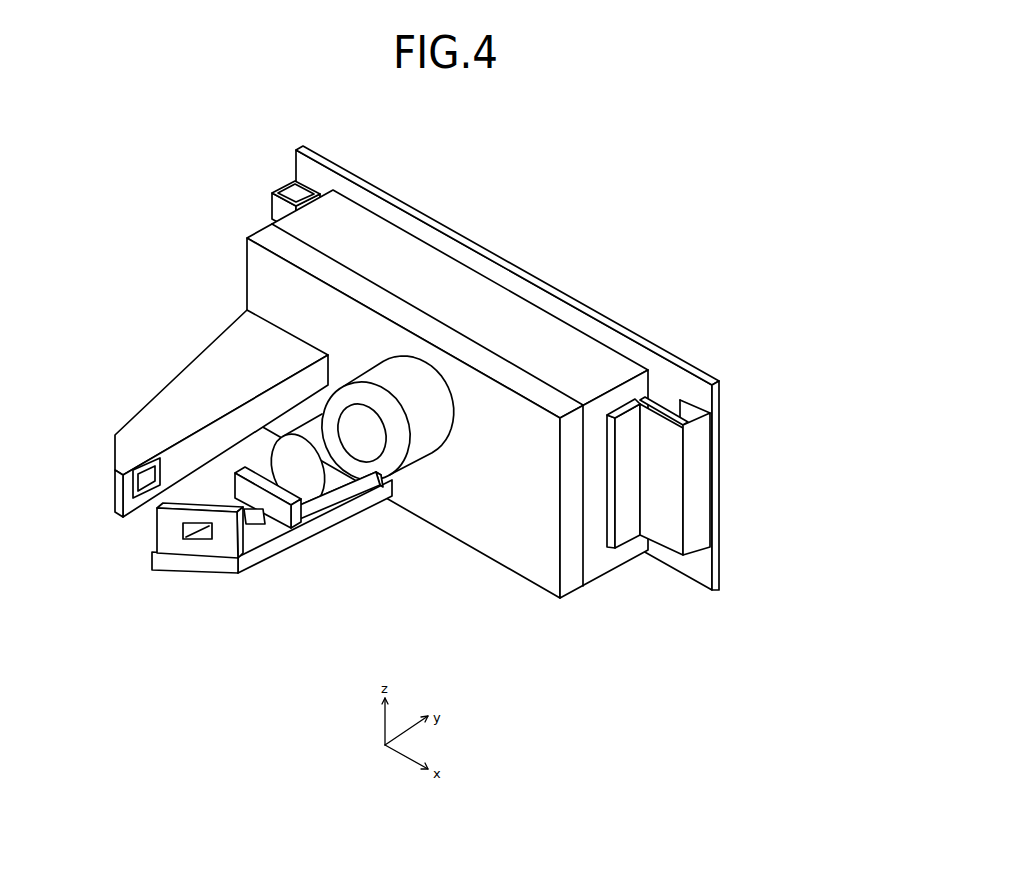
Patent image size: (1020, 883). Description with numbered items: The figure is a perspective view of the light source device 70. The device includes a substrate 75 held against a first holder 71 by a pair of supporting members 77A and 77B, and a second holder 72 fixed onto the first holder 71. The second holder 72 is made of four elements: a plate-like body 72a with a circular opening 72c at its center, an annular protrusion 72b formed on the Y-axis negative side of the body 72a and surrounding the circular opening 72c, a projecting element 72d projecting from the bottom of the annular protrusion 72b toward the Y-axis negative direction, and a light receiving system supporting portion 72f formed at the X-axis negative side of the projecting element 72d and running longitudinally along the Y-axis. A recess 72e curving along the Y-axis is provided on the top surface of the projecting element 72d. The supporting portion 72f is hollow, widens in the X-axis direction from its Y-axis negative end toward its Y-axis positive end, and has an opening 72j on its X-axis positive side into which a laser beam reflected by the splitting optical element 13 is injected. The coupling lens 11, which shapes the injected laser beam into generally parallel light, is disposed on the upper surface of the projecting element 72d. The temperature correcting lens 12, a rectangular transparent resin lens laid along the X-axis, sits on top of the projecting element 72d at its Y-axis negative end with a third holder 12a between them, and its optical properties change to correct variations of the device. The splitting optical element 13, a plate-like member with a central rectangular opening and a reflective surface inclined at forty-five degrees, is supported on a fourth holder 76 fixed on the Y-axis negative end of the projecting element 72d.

The light source device 70 is at (446, 383).
The first holder 71 is at (447, 394).
The second holder 72 is at (395, 428).
The plate-like body 72a is at (604, 518).
The annular protrusion 72b is at (400, 472).
The circular opening 72c is at (378, 475).
The projecting element 72d is at (315, 547).
The recess 72e is at (338, 500).
The light receiving system supporting portion 72f is at (220, 437).
The opening 72j is at (136, 511).
The substrate 75 is at (507, 368).
The fourth holder 76 is at (195, 608).
The supporting member 77A is at (700, 510).
The supporting member 77B is at (277, 172).
The coupling lens 11 is at (338, 522).
The temperature correcting lens 12 is at (268, 536).
The third holder 12a is at (272, 573).
The splitting optical element 13 is at (194, 570).